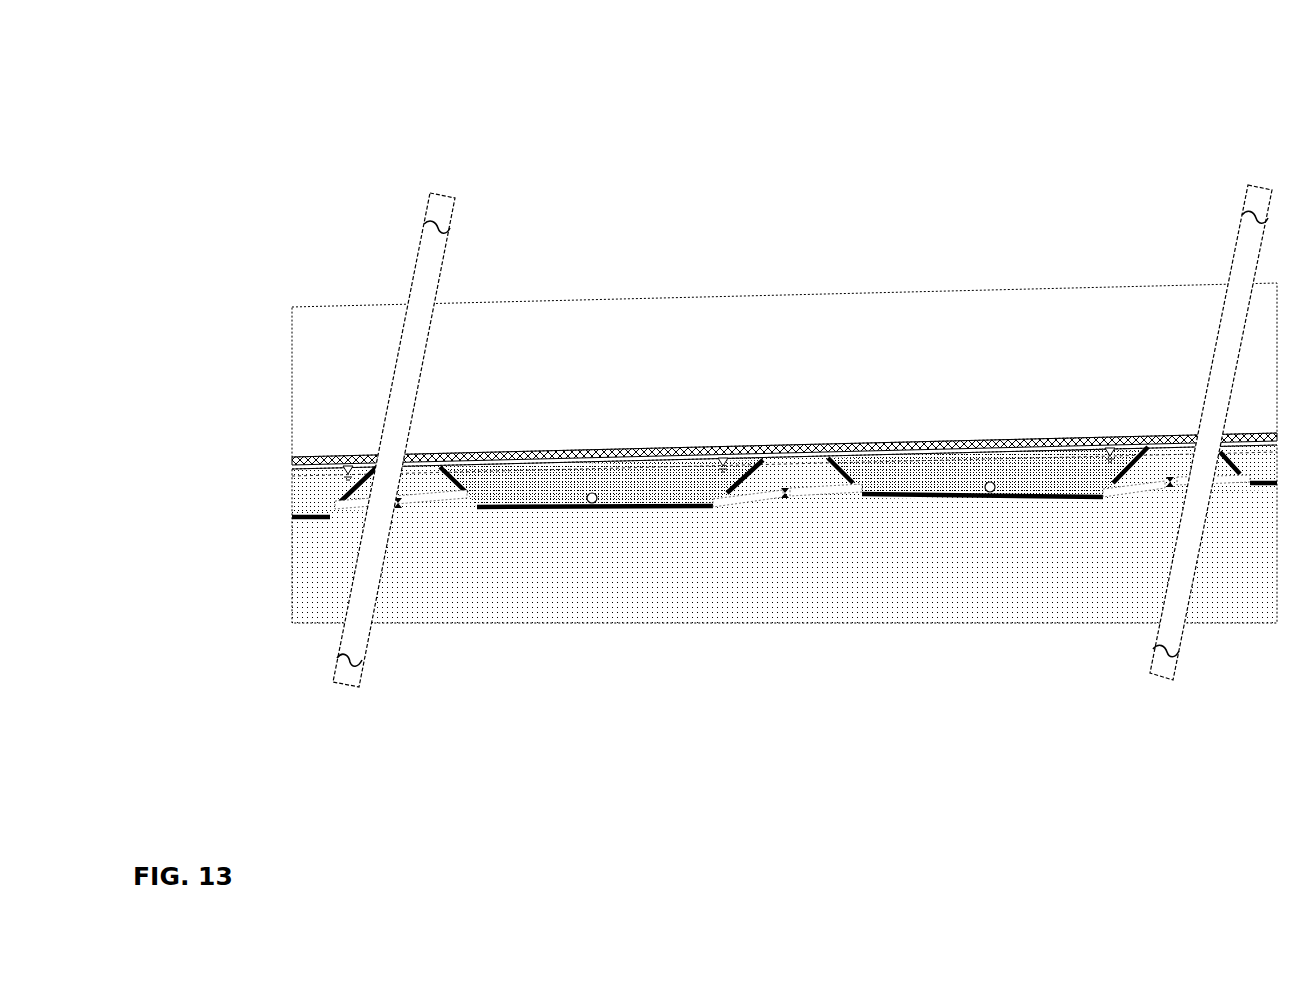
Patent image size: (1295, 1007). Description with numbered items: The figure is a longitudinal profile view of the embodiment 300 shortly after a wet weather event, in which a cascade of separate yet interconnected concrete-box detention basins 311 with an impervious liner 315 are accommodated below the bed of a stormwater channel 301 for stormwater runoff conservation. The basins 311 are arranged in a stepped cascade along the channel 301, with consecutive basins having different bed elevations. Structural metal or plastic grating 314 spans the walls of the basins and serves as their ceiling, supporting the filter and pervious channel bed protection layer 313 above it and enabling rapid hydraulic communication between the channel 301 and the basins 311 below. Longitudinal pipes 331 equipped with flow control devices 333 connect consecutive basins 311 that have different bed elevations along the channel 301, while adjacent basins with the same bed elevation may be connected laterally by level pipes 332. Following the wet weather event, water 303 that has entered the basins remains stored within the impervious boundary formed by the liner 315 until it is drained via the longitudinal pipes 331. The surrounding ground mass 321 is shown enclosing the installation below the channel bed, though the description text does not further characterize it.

The embodiment 300 is at (266, 121).
The stormwater channel 301 is at (365, 357).
The water 303 is at (1090, 455).
The concrete-box detention basins 311 is at (640, 482).
The filter and pervious channel bed protection layer 313 is at (724, 452).
The structural grating 314 is at (673, 462).
The impervious liner 315 is at (560, 507).
The lower geological formation 321 is at (317, 552).
The longitudinal pipes 331 is at (833, 488).
The level pipes 332 is at (592, 504).
The flow control devices 333 is at (786, 498).